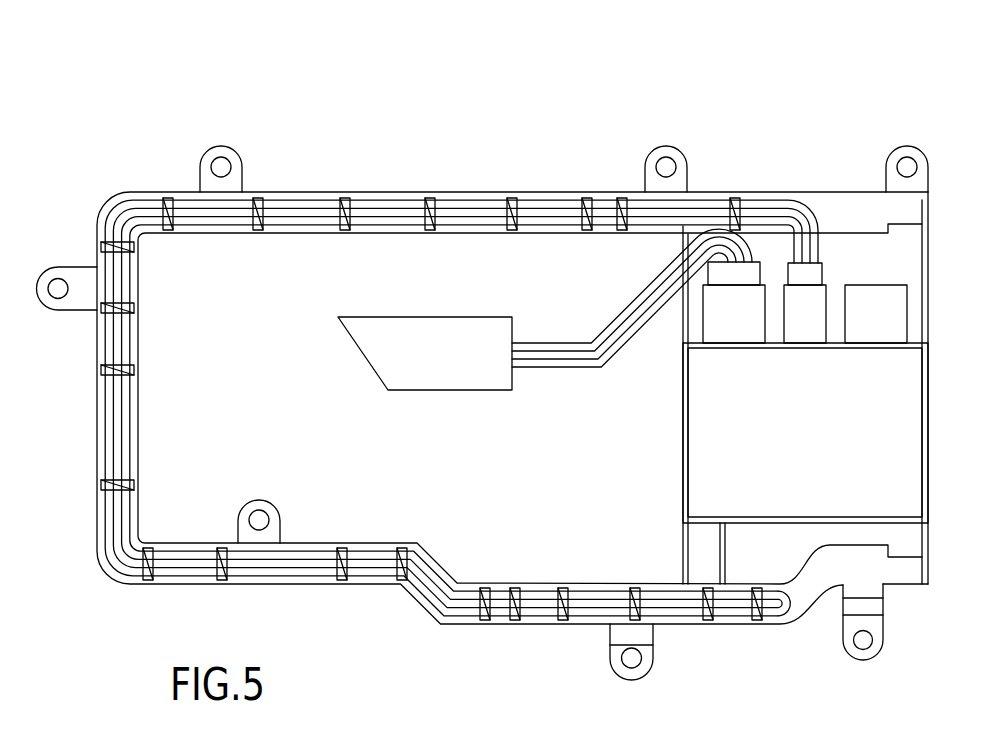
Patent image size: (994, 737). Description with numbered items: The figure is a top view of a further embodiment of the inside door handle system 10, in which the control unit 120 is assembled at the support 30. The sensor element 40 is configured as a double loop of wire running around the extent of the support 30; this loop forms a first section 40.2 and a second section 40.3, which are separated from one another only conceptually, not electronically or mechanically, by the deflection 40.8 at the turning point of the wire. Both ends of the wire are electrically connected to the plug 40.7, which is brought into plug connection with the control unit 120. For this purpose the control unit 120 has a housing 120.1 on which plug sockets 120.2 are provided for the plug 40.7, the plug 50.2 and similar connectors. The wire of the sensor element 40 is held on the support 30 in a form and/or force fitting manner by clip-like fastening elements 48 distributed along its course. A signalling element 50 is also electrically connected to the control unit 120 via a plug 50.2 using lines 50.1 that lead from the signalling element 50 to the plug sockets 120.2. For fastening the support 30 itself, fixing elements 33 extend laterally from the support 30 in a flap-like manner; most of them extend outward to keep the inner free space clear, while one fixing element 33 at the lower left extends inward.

The inside door handle system 10 is at (571, 97).
The support 30 is at (867, 207).
The fixing elements 33 is at (205, 160).
The sensor element 40 is at (463, 184).
The first section 40.2 is at (283, 207).
The second section 40.3 is at (368, 222).
The plug 40.7 is at (813, 209).
The deflection 40.8 is at (775, 615).
The fastening elements 48 is at (160, 198).
The signalling element 50 is at (457, 372).
The lines 50.1 is at (598, 332).
The plug 50.2 is at (734, 209).
The control unit 120 is at (818, 483).
The housing 120.1 is at (703, 482).
The plug sockets 120.2 is at (875, 313).